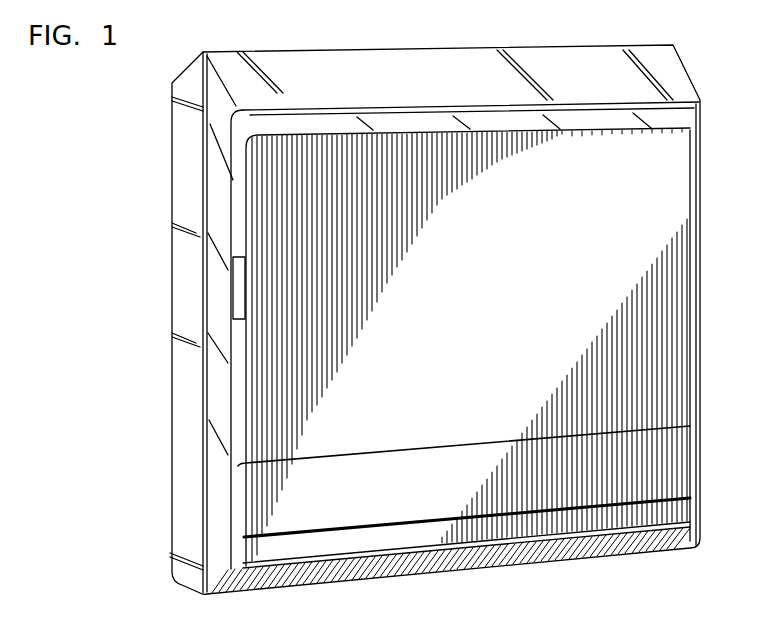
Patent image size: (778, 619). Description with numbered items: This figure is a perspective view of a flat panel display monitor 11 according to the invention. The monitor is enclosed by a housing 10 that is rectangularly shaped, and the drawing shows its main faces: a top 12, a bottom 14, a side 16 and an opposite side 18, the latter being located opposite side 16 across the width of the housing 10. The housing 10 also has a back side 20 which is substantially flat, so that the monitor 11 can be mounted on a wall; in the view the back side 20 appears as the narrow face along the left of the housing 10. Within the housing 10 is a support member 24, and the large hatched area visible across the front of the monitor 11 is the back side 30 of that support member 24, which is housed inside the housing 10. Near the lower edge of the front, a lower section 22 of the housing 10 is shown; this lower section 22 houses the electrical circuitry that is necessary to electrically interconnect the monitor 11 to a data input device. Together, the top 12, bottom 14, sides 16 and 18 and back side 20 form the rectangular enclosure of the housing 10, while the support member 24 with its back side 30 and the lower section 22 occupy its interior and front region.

The housing 10 is at (164, 110).
The flat panel display monitor 11 is at (216, 43).
The top 12 is at (444, 48).
The bottom 14 is at (481, 570).
The side 16 is at (180, 247).
The side 18 is at (697, 342).
The back side 20 is at (172, 205).
The lower section 22 is at (381, 490).
The support member 24 is at (222, 323).
The back side of support member 30 is at (268, 372).